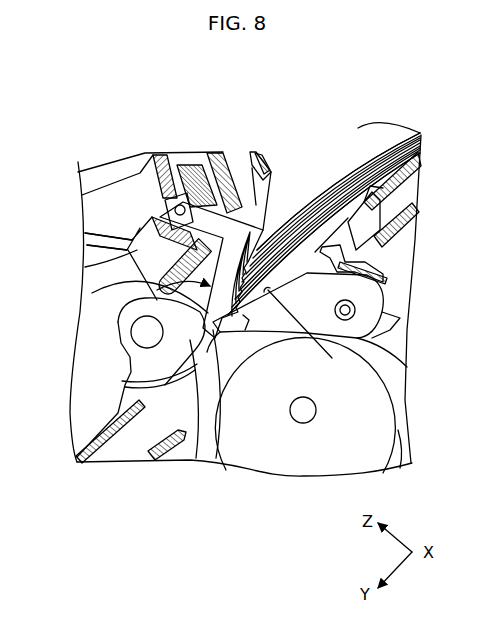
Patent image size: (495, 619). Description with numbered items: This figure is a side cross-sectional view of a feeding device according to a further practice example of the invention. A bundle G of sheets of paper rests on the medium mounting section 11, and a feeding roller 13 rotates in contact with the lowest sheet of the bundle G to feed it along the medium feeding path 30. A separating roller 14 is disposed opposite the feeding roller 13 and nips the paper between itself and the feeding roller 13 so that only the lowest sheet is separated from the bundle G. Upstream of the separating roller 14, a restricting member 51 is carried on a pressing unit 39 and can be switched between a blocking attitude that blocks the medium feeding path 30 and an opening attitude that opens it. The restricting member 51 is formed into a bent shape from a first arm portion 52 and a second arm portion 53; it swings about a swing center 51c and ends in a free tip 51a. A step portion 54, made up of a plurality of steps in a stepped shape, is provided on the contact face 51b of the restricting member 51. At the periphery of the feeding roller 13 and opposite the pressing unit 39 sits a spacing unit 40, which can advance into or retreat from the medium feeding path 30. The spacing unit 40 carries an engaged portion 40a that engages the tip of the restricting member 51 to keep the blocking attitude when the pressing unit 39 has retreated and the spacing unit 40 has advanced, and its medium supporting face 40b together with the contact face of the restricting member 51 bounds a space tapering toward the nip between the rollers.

The medium mounting section 11 is at (385, 192).
The feeding roller 13 is at (363, 415).
The separating roller 14 is at (143, 373).
The medium feeding path 30 is at (322, 241).
The pressing unit 39 is at (120, 262).
The spacing unit 40 is at (367, 288).
The engaged portion 40a is at (207, 458).
The medium supporting face 40b is at (373, 363).
The restricting member 51 is at (125, 311).
The free tip 51a is at (170, 370).
The contact face 51b is at (338, 171).
The swing center 51c is at (184, 203).
The first arm portion 52 is at (222, 190).
The second arm portion 53 is at (243, 315).
The step portion 54 is at (240, 263).
The bundle of sheets of paper G is at (320, 190).